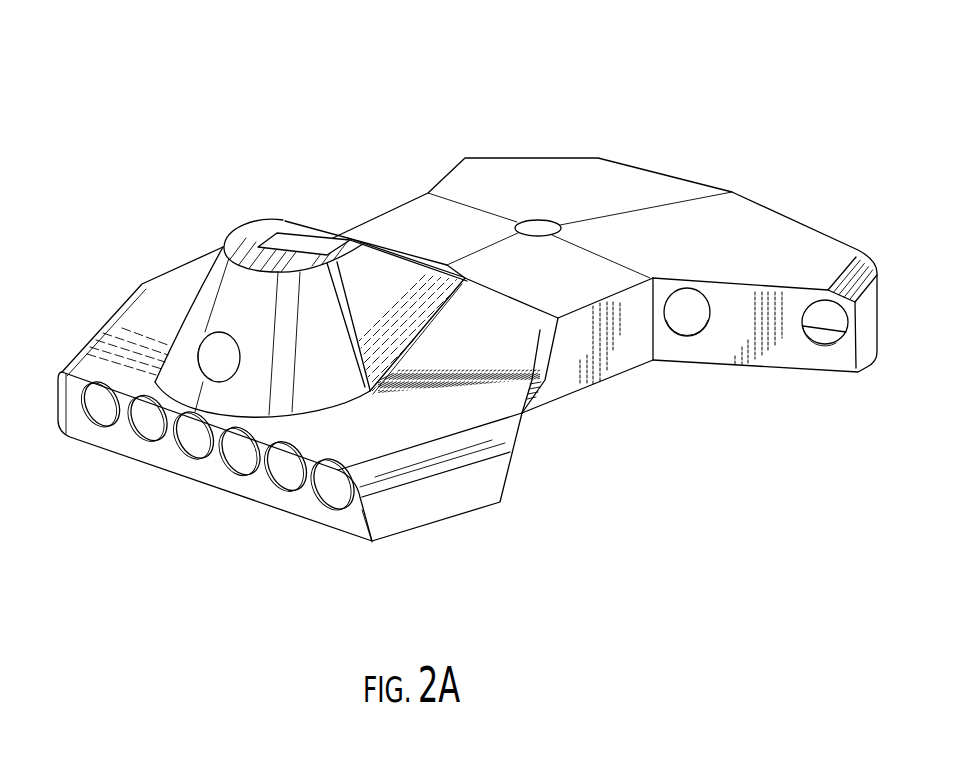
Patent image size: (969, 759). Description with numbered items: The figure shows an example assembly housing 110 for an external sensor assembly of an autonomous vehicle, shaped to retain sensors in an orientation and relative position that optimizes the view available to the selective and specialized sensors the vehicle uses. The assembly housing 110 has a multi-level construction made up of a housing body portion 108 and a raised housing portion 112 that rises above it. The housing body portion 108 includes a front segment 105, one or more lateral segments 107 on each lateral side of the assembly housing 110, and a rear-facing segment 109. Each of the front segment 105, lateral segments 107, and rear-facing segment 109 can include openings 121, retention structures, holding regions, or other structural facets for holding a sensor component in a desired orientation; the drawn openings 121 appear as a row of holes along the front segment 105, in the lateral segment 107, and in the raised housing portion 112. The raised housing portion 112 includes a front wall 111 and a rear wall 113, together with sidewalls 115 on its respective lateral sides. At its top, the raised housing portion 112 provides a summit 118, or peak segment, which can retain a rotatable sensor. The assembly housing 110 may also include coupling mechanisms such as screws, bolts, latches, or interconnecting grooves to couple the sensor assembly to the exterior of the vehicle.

The front segment 105 is at (217, 462).
The lateral segment 107 is at (617, 358).
The housing body portion 108 is at (445, 506).
The rear-facing segment 109 is at (760, 212).
The assembly housing 110 is at (456, 146).
The front wall 111 is at (235, 315).
The raised housing portion 112 is at (212, 217).
The rear wall 113 is at (372, 250).
The sidewall 115 is at (322, 375).
The summit 118 is at (257, 240).
The openings 121 is at (240, 372).